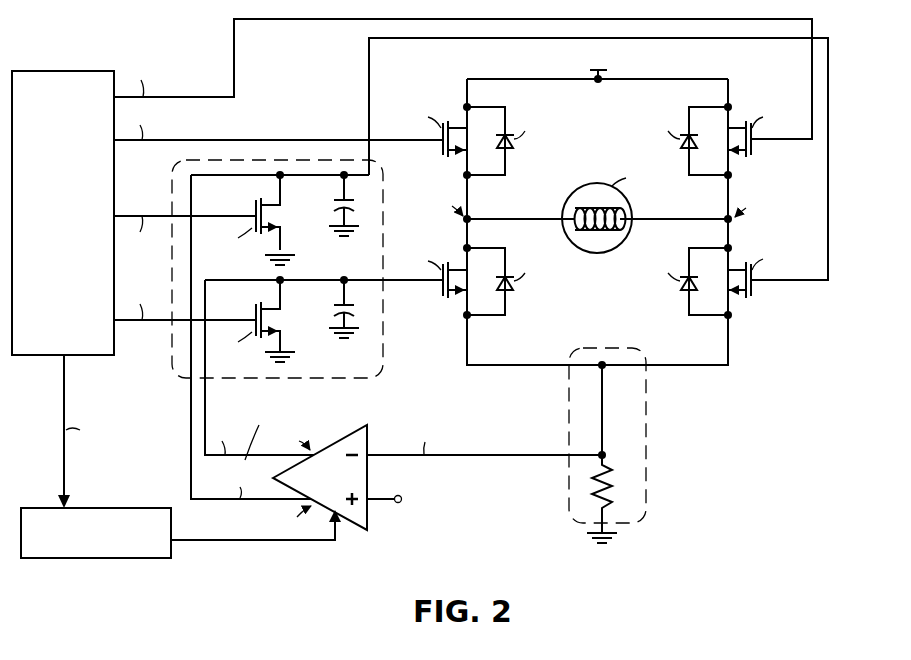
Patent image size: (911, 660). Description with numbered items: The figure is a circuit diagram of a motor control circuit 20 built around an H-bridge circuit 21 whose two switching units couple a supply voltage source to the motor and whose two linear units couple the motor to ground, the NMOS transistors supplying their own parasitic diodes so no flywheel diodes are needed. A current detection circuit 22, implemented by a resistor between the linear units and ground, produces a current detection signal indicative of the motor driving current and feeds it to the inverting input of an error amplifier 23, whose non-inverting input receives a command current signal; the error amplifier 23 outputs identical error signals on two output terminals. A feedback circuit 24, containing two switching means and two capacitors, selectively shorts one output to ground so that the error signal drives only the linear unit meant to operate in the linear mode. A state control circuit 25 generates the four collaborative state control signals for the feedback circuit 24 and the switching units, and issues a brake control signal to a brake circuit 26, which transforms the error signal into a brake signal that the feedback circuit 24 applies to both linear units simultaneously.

The motor control circuit 20 is at (846, 42).
The H-bridge circuit 21 is at (735, 77).
The current detection circuit 22 is at (647, 446).
The error amplifier 23 is at (343, 438).
The feedback circuit 24 is at (384, 346).
The state control circuit 25 is at (80, 71).
The brake circuit 26 is at (138, 507).